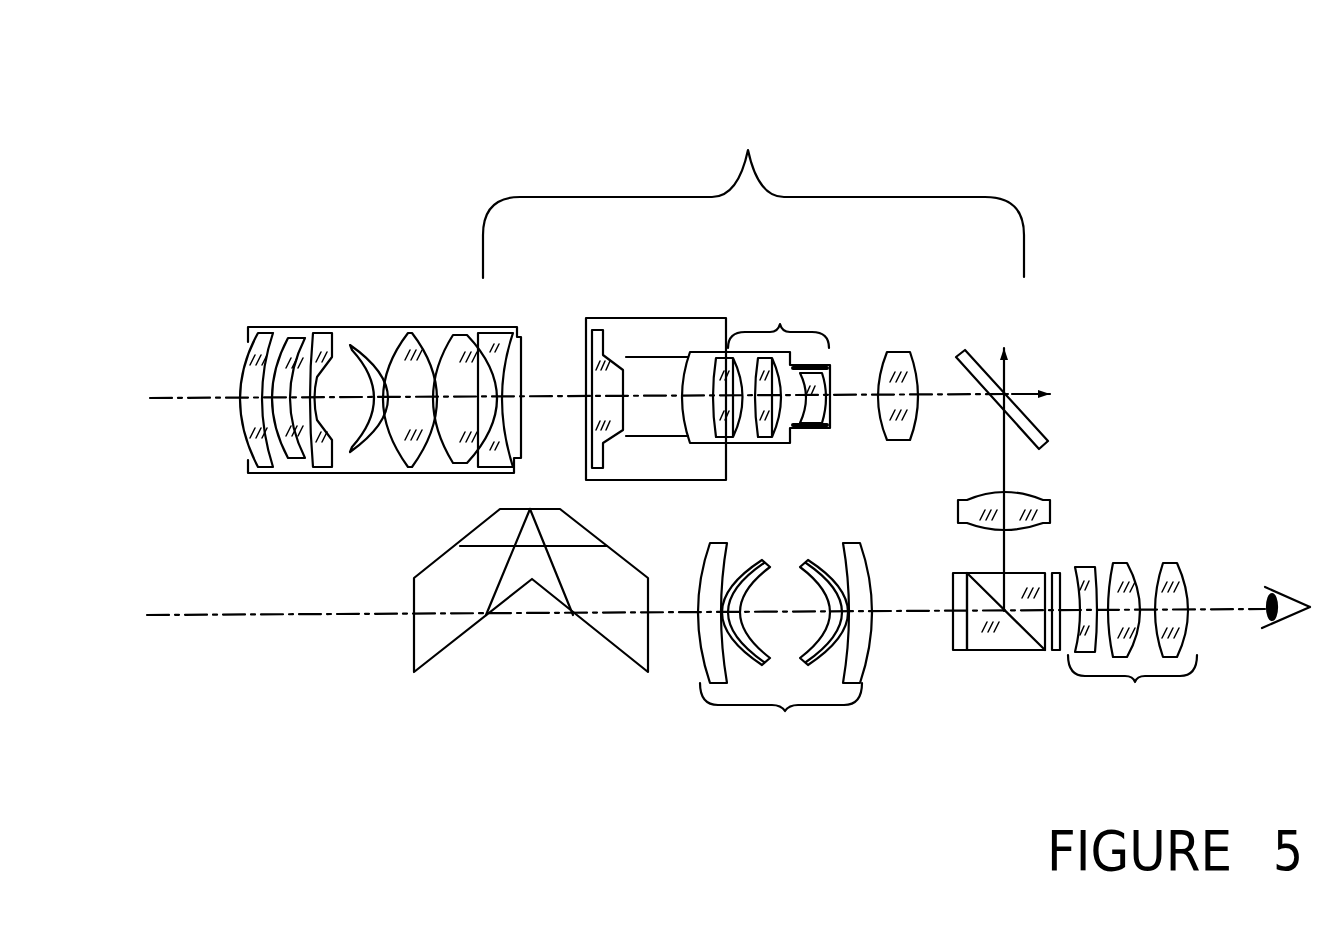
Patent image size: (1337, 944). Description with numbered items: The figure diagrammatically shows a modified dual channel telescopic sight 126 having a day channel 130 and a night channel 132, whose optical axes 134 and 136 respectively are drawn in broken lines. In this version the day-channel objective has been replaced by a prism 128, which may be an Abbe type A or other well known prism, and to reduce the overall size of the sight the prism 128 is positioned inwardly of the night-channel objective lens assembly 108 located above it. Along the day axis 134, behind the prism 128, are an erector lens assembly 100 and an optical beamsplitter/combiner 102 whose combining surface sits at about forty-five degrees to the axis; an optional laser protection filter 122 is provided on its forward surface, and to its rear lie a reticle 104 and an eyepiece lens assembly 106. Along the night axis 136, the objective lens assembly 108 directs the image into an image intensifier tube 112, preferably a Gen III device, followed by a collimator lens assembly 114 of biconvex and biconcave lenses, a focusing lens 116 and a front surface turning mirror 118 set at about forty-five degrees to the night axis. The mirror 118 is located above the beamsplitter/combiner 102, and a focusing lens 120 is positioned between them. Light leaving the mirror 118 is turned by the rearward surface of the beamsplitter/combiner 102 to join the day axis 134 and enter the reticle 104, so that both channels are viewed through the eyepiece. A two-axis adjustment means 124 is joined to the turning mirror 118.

The erector lens assembly 100 is at (785, 649).
The optical beamsplitter/combiner 102 is at (1012, 651).
The reticle 104 is at (1058, 650).
The eyepiece lens assembly 106 is at (1132, 633).
The objective lens assembly 108 is at (383, 327).
The image intensifier tube 112 is at (681, 316).
The collimator lens assembly 114 is at (756, 370).
The focusing lens 116 is at (898, 350).
The front surface turning mirror 118 is at (975, 350).
The focusing lens 120 is at (1050, 508).
The laser protection filter 122 is at (964, 650).
The two-axis adjustment means 124 is at (1050, 385).
The sight 126 is at (578, 140).
The prism 128 is at (455, 645).
The day channel 130 is at (673, 752).
The night channel 132 is at (753, 195).
The optical axis 134 is at (168, 617).
The optical axis 136 is at (166, 396).